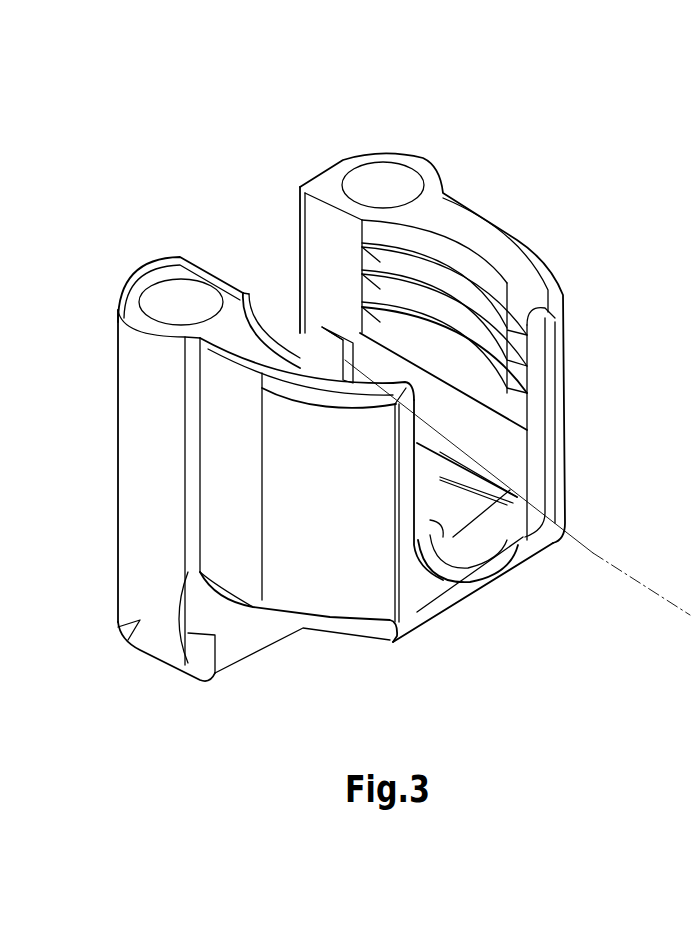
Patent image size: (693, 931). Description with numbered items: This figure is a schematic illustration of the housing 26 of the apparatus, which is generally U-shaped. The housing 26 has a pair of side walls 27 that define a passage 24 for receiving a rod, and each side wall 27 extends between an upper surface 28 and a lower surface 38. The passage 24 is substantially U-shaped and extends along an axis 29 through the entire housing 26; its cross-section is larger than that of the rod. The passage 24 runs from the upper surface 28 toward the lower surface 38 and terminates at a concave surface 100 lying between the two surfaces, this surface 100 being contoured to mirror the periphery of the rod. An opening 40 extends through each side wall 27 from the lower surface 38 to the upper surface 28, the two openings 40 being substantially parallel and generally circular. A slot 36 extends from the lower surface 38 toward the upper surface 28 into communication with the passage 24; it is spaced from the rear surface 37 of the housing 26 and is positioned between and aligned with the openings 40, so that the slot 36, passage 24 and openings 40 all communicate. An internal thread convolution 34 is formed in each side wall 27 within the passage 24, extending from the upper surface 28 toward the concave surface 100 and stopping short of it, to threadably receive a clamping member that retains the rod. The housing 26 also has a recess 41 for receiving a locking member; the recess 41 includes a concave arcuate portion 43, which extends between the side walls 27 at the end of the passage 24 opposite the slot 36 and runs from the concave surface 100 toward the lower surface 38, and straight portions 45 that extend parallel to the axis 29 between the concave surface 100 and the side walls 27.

The passage 24 is at (440, 436).
The housing 26 is at (118, 406).
The side wall 27 is at (553, 357).
The upper surface 28 is at (443, 218).
The axis 29 is at (596, 554).
The internal thread convolution 34 is at (478, 272).
The slot 36 is at (340, 353).
The rear surface 37 is at (297, 220).
The lower surface 38 is at (313, 640).
The opening 40 is at (181, 300).
The recess 41 is at (466, 550).
The arcuate portion 43 is at (457, 560).
The straight portion 45 is at (467, 477).
The concave surface 100 is at (430, 530).